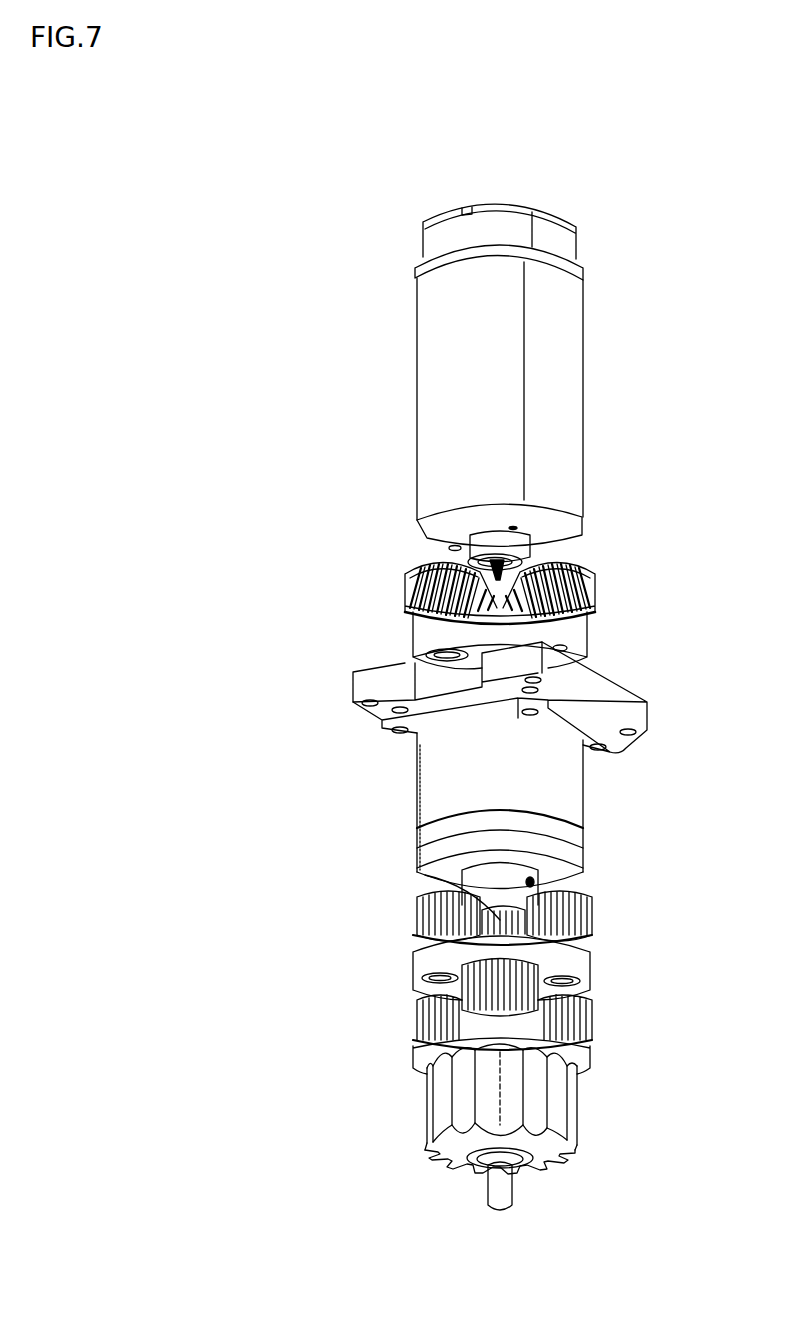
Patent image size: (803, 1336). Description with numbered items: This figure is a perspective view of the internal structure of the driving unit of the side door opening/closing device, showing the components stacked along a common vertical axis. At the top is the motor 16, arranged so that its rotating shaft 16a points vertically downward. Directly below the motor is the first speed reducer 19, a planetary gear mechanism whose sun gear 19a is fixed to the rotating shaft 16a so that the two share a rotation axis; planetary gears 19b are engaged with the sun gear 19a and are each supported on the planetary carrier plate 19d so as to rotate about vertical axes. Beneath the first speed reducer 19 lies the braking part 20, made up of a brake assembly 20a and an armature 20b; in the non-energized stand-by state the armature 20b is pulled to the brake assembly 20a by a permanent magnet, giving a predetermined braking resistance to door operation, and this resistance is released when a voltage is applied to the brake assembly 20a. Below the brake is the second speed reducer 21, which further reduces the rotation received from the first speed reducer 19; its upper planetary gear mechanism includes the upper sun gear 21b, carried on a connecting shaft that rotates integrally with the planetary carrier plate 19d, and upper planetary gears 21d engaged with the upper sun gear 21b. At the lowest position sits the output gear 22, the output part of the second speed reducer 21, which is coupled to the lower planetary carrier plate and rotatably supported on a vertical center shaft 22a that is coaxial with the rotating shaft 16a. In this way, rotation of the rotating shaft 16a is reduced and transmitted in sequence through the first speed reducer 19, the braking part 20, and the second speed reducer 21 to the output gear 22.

The motor 16 is at (510, 387).
The rotating shaft 16a is at (468, 544).
The first speed reducer 19 is at (524, 641).
The sun gear 19a is at (545, 547).
The planetary gears 19b is at (408, 597).
The planetary carrier plate 19d is at (587, 643).
The braking part 20 is at (534, 811).
The brake assembly 20a is at (418, 800).
The armature 20b is at (600, 798).
The second speed reducer 21 is at (535, 957).
The upper sun gear 21b is at (470, 873).
The upper planetary gears 21d is at (415, 922).
The output gear 22 is at (538, 1137).
The center shaft 22a is at (518, 1190).